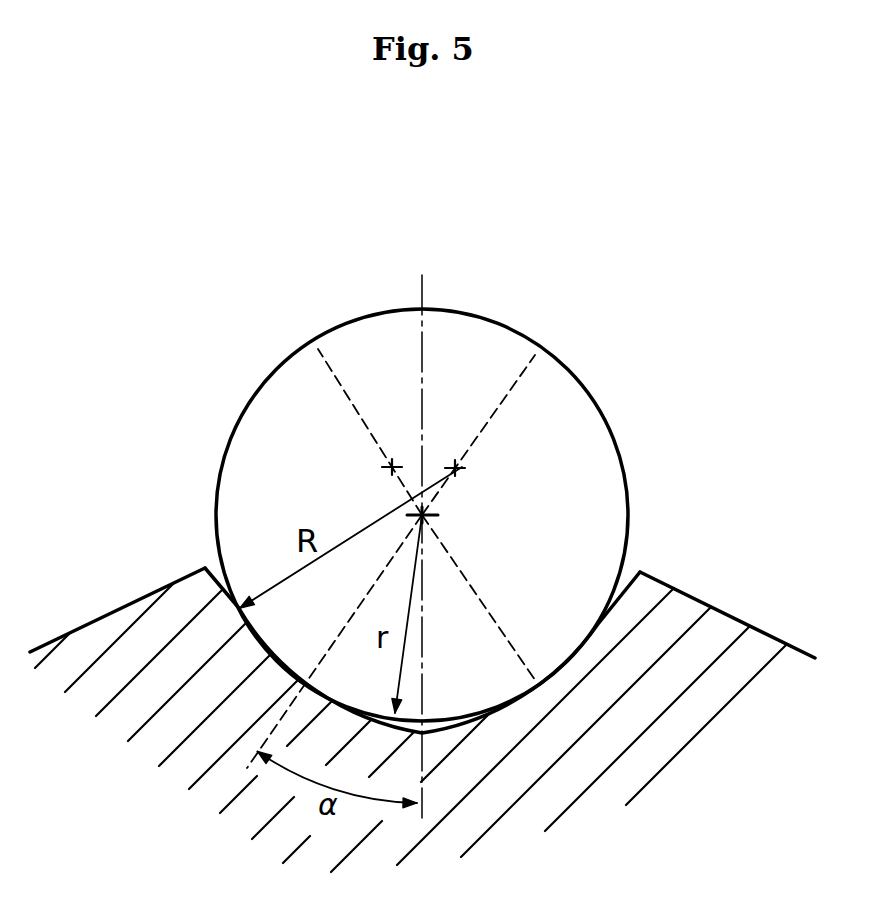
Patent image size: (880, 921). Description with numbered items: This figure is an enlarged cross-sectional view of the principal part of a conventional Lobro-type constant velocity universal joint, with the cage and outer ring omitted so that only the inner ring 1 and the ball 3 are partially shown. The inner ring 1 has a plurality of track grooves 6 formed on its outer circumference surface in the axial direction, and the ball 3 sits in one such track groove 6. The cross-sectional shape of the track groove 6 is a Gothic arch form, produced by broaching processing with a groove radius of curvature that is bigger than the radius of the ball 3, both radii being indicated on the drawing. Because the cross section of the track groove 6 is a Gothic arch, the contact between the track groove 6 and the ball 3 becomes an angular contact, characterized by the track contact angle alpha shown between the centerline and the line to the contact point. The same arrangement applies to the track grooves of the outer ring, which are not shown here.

The inner ring 1 is at (722, 630).
The ball 3 is at (570, 398).
The track groove 6 is at (562, 652).